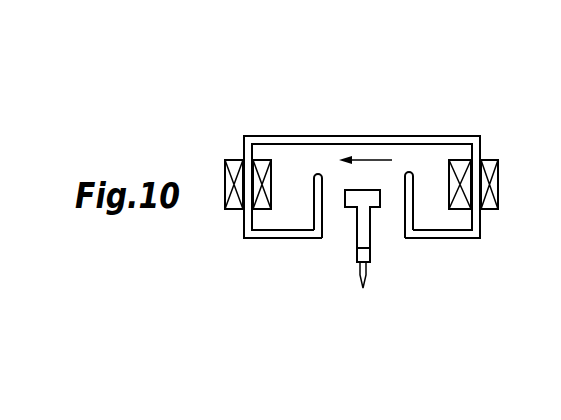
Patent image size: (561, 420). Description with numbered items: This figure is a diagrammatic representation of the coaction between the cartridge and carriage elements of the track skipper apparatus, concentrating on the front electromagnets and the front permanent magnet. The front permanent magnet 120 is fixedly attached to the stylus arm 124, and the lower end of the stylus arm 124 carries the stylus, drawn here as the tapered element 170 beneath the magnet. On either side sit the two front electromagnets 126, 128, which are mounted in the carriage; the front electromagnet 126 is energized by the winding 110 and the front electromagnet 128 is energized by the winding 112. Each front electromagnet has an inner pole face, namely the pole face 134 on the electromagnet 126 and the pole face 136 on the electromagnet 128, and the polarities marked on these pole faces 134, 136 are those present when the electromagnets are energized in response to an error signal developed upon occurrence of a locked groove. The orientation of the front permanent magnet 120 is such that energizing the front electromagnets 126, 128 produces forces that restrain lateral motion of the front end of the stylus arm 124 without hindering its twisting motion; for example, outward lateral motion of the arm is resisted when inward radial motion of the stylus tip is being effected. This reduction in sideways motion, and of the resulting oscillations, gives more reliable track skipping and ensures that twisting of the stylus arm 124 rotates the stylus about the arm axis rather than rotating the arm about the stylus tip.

The winding 110 is at (224, 168).
The winding 112 is at (498, 177).
The front permanent magnet 120 is at (380, 201).
The stylus arm 124 is at (356, 265).
The front electromagnet 126 is at (276, 241).
The front electromagnet 128 is at (467, 244).
The pole face 134 is at (305, 193).
The pole face 136 is at (413, 192).
The print needle 170 is at (367, 276).